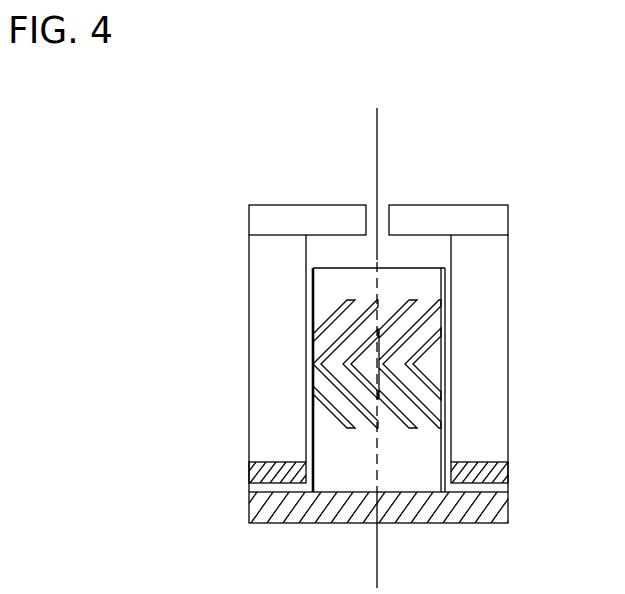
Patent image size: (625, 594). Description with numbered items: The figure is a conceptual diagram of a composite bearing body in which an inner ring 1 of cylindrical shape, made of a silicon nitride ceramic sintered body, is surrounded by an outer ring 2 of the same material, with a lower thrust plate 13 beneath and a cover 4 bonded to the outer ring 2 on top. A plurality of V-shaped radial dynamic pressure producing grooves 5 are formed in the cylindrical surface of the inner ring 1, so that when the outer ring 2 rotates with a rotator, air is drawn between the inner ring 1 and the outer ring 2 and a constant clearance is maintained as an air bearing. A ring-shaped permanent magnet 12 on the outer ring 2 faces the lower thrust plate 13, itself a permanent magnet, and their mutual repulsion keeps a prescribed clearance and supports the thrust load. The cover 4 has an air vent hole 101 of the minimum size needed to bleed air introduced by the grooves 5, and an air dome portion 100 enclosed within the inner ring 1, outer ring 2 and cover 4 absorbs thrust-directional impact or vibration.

The inner ring 1 is at (404, 285).
The outer ring 2 is at (485, 337).
The cover 4 is at (478, 218).
The radial dynamic pressure producing grooves 5 is at (453, 300).
The permanent magnet 12 is at (482, 464).
The lower thrust plate 13 is at (504, 504).
The air dome portion 100 is at (338, 252).
The air vent hole 101 is at (383, 205).